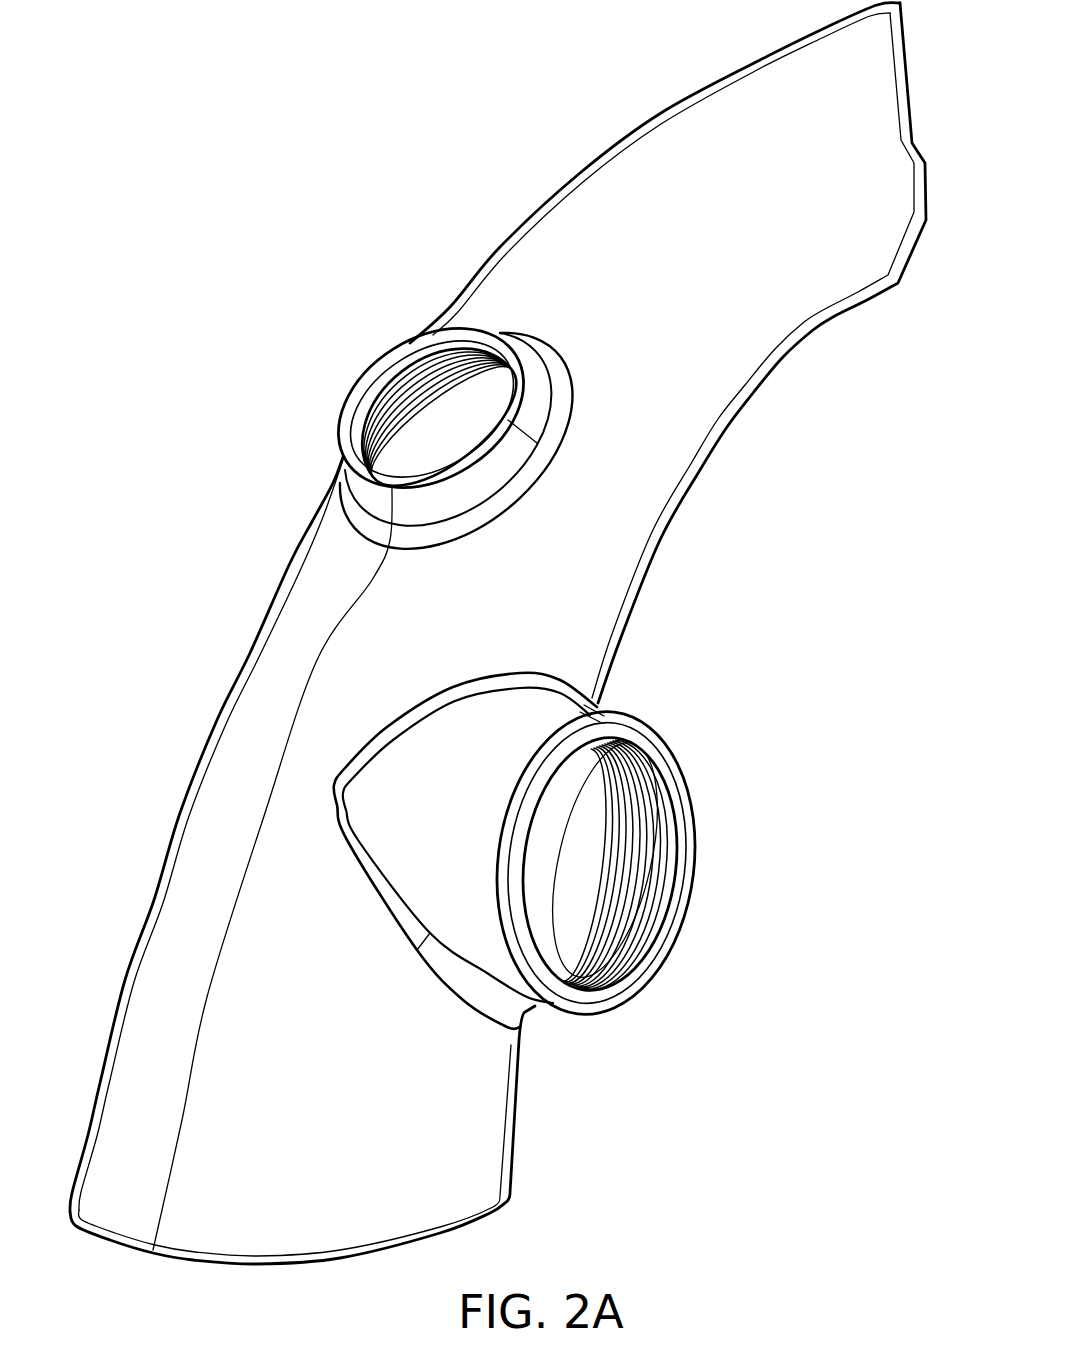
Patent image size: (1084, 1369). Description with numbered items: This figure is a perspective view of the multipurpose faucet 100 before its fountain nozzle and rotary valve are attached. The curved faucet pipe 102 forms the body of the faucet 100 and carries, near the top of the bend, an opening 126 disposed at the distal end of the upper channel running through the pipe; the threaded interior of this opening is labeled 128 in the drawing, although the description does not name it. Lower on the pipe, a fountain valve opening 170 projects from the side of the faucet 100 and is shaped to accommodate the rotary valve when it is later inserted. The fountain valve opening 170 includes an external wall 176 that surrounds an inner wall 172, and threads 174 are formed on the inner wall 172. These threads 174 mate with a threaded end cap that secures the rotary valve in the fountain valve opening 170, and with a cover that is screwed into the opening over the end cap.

The faucet 100 is at (521, 138).
The faucet pipe 102 is at (635, 535).
The opening 126 is at (362, 351).
The first port threads 128 is at (400, 433).
The fountain valve opening 170 is at (707, 934).
The inner wall 172 is at (580, 870).
The threads 174 is at (665, 885).
The external wall 176 is at (597, 713).